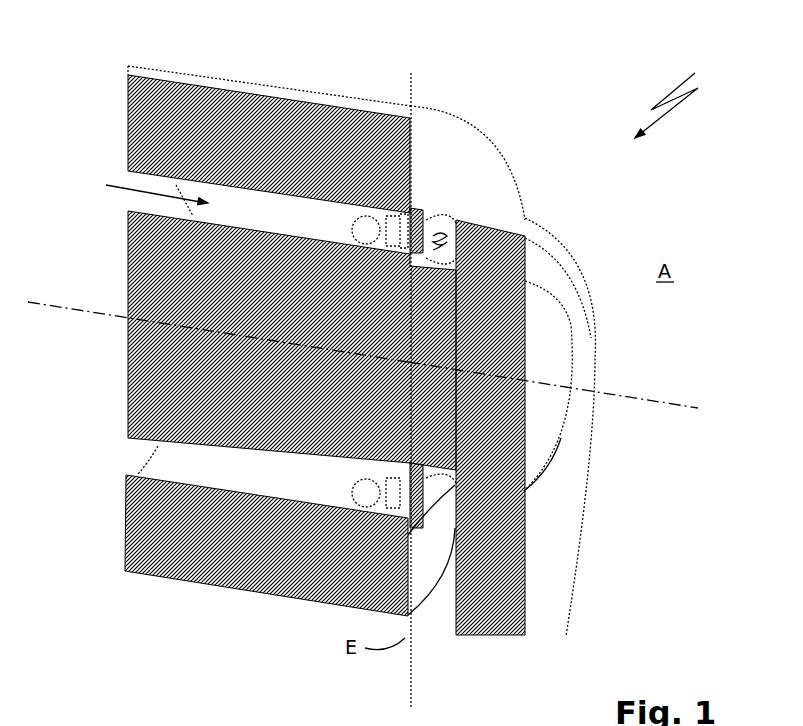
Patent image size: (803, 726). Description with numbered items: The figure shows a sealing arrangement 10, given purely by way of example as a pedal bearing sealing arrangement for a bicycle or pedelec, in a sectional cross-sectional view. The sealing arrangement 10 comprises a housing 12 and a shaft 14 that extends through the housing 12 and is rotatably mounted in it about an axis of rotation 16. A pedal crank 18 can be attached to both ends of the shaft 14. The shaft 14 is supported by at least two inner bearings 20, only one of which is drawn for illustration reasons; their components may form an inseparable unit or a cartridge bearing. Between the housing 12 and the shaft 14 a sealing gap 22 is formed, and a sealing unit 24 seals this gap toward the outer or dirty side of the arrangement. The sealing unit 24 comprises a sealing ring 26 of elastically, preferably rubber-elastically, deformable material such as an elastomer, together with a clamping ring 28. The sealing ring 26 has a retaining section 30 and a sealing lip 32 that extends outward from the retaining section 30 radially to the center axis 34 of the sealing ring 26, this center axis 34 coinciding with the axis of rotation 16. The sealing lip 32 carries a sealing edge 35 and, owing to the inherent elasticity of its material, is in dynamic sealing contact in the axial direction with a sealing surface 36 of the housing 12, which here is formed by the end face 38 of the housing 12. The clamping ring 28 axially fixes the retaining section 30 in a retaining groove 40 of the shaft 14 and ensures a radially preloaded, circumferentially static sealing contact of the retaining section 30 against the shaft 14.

The sealing arrangement 10 is at (685, 90).
The housing 12 is at (343, 150).
The shaft 14 is at (165, 367).
The axis of rotation 16 is at (383, 378).
The pedal crank 18 is at (543, 528).
The inner bearings 20 is at (340, 199).
The sealing gap 22 is at (133, 187).
The sealing unit 24 is at (432, 219).
The sealing ring 26 is at (410, 243).
The clamping ring 28 is at (400, 246).
The retaining section 30 is at (397, 262).
The sealing lip 32 is at (410, 200).
The center axis 34 is at (553, 385).
The sealing edge 35 is at (400, 196).
The sealing surface 36 is at (450, 137).
The end face 38 is at (560, 427).
The retaining groove 40 is at (417, 265).